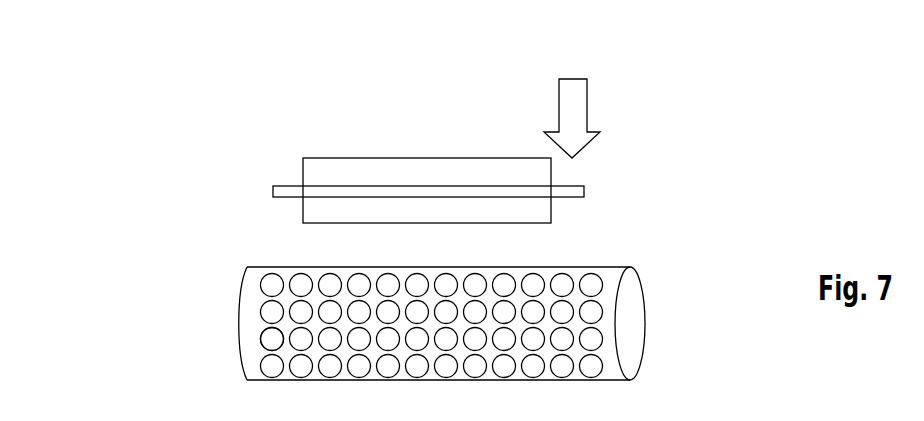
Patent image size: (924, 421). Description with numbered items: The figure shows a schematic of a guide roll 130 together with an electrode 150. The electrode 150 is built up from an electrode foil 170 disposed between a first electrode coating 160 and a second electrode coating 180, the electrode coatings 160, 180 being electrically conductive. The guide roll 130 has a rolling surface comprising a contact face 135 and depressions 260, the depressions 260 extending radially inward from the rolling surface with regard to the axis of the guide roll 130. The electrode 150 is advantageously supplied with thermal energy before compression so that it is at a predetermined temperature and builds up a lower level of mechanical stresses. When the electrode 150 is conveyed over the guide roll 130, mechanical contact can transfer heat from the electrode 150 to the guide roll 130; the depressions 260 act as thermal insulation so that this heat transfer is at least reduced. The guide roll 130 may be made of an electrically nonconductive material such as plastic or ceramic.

The electrode 150 is at (418, 107).
The first electrode coating 160 is at (313, 168).
The electrode foil 170 is at (280, 187).
The second electrode coating 180 is at (313, 202).
The guide roll 130 is at (218, 303).
The contact face 135 is at (252, 318).
The depressions 260 is at (267, 343).